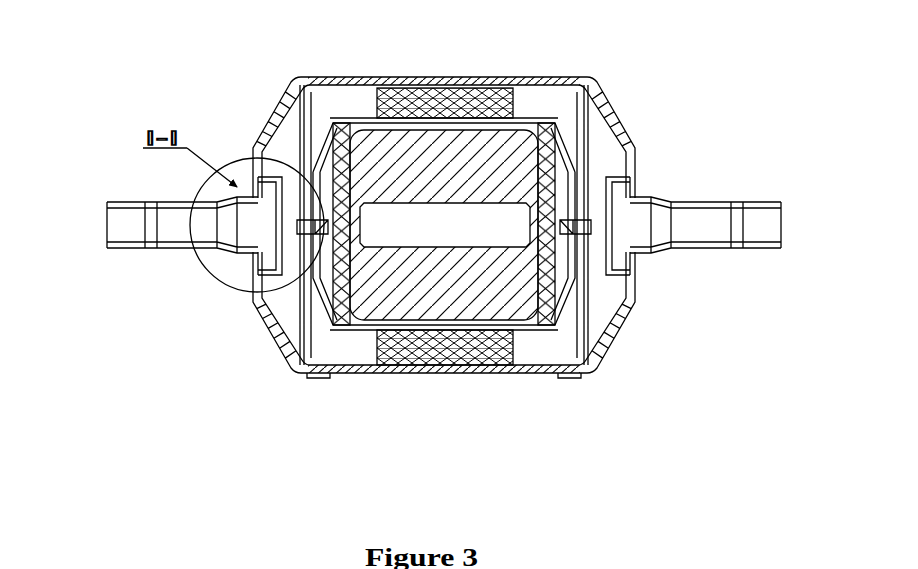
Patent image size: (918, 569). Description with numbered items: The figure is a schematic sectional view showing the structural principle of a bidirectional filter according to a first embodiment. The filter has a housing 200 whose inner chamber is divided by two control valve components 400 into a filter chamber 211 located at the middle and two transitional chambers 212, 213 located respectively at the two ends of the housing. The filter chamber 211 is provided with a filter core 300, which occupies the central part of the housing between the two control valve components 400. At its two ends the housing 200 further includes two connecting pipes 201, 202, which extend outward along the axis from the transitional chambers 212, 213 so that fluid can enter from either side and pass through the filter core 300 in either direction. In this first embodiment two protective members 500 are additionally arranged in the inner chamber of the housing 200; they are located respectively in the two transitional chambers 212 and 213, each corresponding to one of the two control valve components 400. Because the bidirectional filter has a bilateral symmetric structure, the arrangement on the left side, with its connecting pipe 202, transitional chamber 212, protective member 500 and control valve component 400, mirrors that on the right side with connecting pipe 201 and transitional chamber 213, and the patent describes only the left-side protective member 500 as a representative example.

The housing 200 is at (337, 370).
The connecting pipe 201 is at (673, 251).
The connecting pipe 202 is at (127, 233).
The filter chamber 211 is at (360, 98).
The transitional chamber 212 is at (283, 148).
The transitional chamber 213 is at (607, 153).
The filter core 300 is at (457, 307).
The control valve component 400 is at (570, 125).
The protective member 500 is at (283, 247).